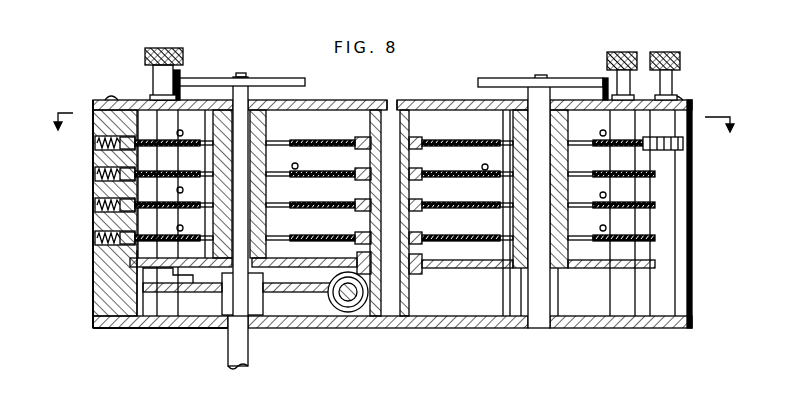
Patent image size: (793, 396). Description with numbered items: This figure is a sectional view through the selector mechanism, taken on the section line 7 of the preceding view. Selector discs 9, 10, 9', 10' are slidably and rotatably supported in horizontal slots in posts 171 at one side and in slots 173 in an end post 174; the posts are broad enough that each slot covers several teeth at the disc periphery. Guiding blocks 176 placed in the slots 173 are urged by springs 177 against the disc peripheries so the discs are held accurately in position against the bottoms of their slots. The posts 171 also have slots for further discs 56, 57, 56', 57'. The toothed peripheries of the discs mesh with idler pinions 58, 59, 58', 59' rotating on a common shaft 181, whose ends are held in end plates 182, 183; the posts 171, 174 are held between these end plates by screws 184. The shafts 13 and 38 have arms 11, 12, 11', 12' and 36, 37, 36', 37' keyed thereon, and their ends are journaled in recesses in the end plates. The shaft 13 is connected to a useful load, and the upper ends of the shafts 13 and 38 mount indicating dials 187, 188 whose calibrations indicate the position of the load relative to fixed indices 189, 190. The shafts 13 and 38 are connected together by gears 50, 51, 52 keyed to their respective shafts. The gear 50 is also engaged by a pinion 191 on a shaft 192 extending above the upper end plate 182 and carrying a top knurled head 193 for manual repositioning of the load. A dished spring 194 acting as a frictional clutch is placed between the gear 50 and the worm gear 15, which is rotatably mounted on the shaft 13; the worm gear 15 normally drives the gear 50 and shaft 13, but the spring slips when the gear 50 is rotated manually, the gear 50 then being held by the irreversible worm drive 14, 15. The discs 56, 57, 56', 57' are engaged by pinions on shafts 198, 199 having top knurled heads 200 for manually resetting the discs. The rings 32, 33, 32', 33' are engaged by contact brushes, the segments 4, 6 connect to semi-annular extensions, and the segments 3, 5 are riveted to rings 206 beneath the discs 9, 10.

The segment 3 is at (140, 112).
The segment 4 is at (332, 138).
The segment 5 is at (97, 202).
The segment 6 is at (333, 172).
The section line 7 is at (392, 119).
The selector disc 9 is at (131, 155).
The selector disc 9' is at (133, 218).
The selector disc 10 is at (127, 186).
The selector disc 10' is at (130, 257).
The arm 11 is at (167, 166).
The arm 11' is at (193, 189).
The arm 12 is at (310, 195).
The arm 12' is at (191, 227).
The shaft 13 is at (241, 73).
The worm 14 is at (360, 312).
The worm gear 15 is at (305, 297).
The ring 32 is at (467, 107).
The ring 32' is at (650, 201).
The ring 33 is at (647, 170).
The ring 33' is at (650, 243).
The arm 36 is at (591, 127).
The arm 36' is at (590, 191).
The arm 37 is at (471, 160).
The arm 37' is at (590, 222).
The shaft 38 is at (535, 310).
The gear 50 is at (250, 270).
The gear 51 is at (460, 287).
The gear 52 is at (413, 272).
The disc 56 is at (428, 148).
The disc 56' is at (461, 196).
The disc 57 is at (467, 163).
The disc 57' is at (461, 229).
The idler pinion 58 is at (420, 111).
The idler pinion 58' is at (352, 206).
The idler pinion 59 is at (356, 153).
The idler pinion 59' is at (311, 217).
The post 171 is at (505, 330).
The slot 173 is at (97, 232).
The end post 174 is at (96, 313).
The guiding block 176 is at (97, 125).
The spring 177 is at (97, 170).
The shaft 181 is at (390, 99).
The end plate 182 is at (98, 100).
The end plate 183 is at (110, 328).
The screw 184 is at (111, 97).
The indicating dial 187 is at (268, 78).
The indicating dial 188 is at (500, 78).
The fixed index 189 is at (181, 78).
The fixed index 190 is at (601, 80).
The pinion 191 is at (97, 298).
The shaft 192 is at (148, 55).
The knurled head 193 is at (170, 50).
The dished spring 194 is at (205, 290).
The shaft 198 is at (668, 267).
The shaft 199 is at (628, 298).
The knurled head 200 is at (637, 52).
The ring 206 is at (192, 184).